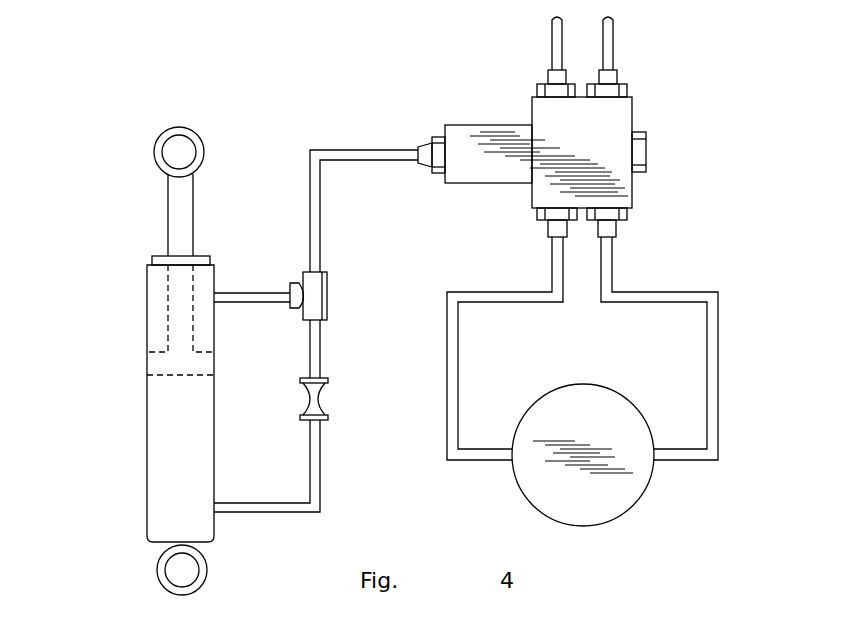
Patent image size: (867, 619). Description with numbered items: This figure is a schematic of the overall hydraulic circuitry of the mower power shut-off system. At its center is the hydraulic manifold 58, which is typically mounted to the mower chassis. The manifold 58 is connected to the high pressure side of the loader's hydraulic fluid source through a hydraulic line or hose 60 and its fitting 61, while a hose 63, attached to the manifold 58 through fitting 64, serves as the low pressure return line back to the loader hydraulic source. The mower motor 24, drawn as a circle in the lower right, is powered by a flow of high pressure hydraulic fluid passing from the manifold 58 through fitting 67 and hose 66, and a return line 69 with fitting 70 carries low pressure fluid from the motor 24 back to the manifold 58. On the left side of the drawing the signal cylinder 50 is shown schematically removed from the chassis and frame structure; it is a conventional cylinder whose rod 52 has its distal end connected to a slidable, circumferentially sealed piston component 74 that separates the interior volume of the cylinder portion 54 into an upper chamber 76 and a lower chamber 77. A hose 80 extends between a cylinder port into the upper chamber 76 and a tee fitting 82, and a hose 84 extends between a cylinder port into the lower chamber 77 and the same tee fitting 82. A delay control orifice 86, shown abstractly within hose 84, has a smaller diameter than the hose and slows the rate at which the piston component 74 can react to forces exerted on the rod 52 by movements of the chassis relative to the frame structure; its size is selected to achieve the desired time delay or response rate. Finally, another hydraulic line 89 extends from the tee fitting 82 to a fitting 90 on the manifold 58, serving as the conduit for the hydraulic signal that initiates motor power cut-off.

The mower motor 24 is at (612, 490).
The signal cylinder 50 is at (117, 408).
The rod 52 is at (176, 218).
The cylinder portion 54 is at (157, 515).
The hydraulic manifold 58 is at (653, 114).
The hydraulic line or hose 60 is at (608, 45).
The fitting 61 is at (627, 87).
The hose 63 is at (555, 45).
The fitting 64 is at (538, 92).
The hose 66 is at (716, 370).
The fitting 67 is at (615, 215).
The return line 69 is at (452, 353).
The fitting 70 is at (540, 215).
The piston component 74 is at (157, 365).
The upper chamber 76 is at (157, 297).
The lower chamber 77 is at (168, 483).
The hose 80 is at (252, 295).
The tee fitting 82 is at (325, 300).
The hose 84 is at (318, 353).
The delay control orifice 86 is at (325, 405).
The hydraulic line 89 is at (315, 155).
The fitting 90 is at (443, 135).